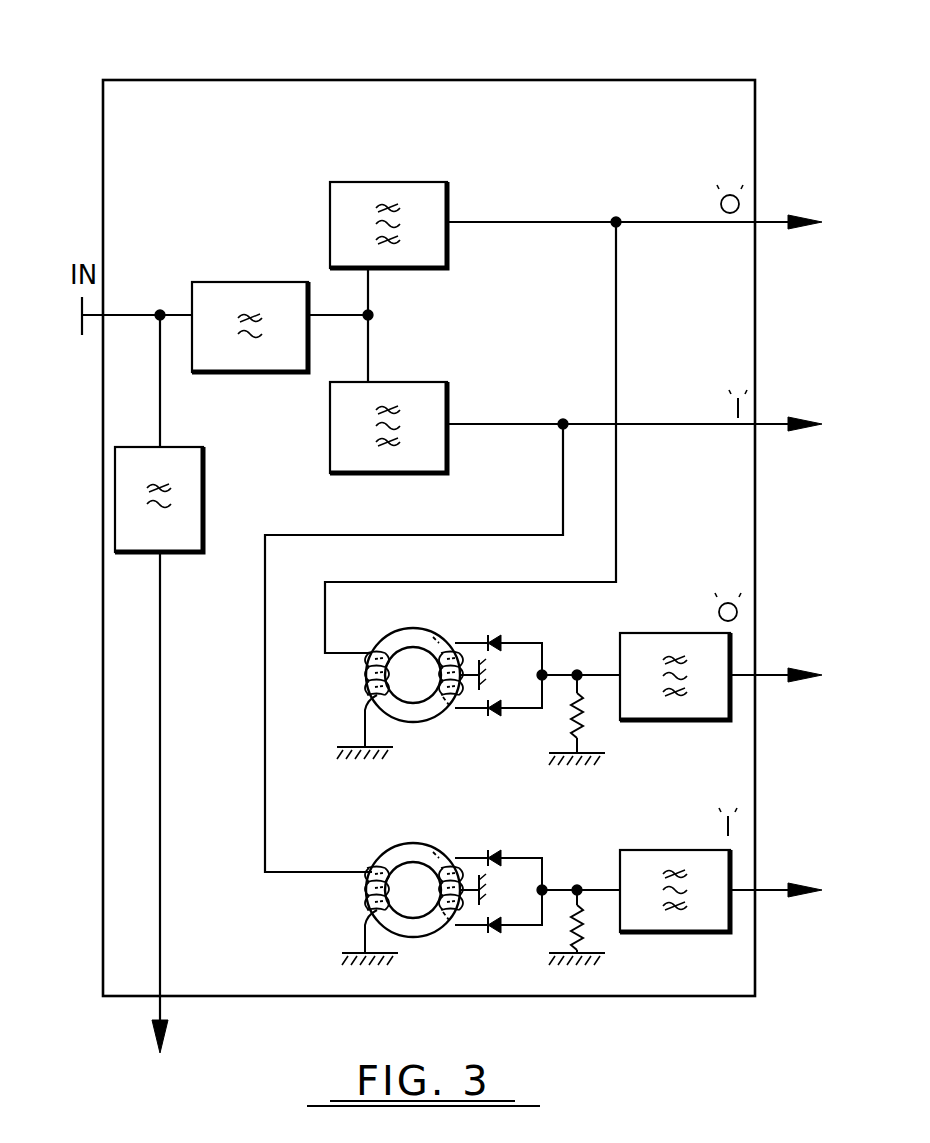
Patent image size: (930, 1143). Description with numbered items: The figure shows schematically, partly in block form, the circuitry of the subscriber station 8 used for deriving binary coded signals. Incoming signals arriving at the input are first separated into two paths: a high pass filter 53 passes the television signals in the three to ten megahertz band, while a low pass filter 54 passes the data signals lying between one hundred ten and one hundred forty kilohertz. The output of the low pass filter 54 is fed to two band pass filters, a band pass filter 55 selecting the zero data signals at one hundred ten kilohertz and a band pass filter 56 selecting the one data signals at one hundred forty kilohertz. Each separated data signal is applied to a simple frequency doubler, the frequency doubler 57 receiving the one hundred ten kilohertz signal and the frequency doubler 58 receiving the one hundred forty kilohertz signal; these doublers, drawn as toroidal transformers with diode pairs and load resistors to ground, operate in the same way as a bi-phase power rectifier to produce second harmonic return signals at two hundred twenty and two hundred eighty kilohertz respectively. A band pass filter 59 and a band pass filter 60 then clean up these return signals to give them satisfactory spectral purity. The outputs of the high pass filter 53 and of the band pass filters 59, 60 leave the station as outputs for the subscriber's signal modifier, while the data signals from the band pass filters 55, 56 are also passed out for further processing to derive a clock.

The subscriber station 8 is at (212, 80).
The high pass filter 53 is at (182, 508).
The low pass filter 54 is at (237, 295).
The band pass filter 55 is at (372, 196).
The band pass filter 56 is at (400, 396).
The frequency doubler 57 is at (372, 652).
The frequency doubler 58 is at (372, 872).
The band pass filter 59 is at (628, 650).
The band pass filter 60 is at (630, 893).